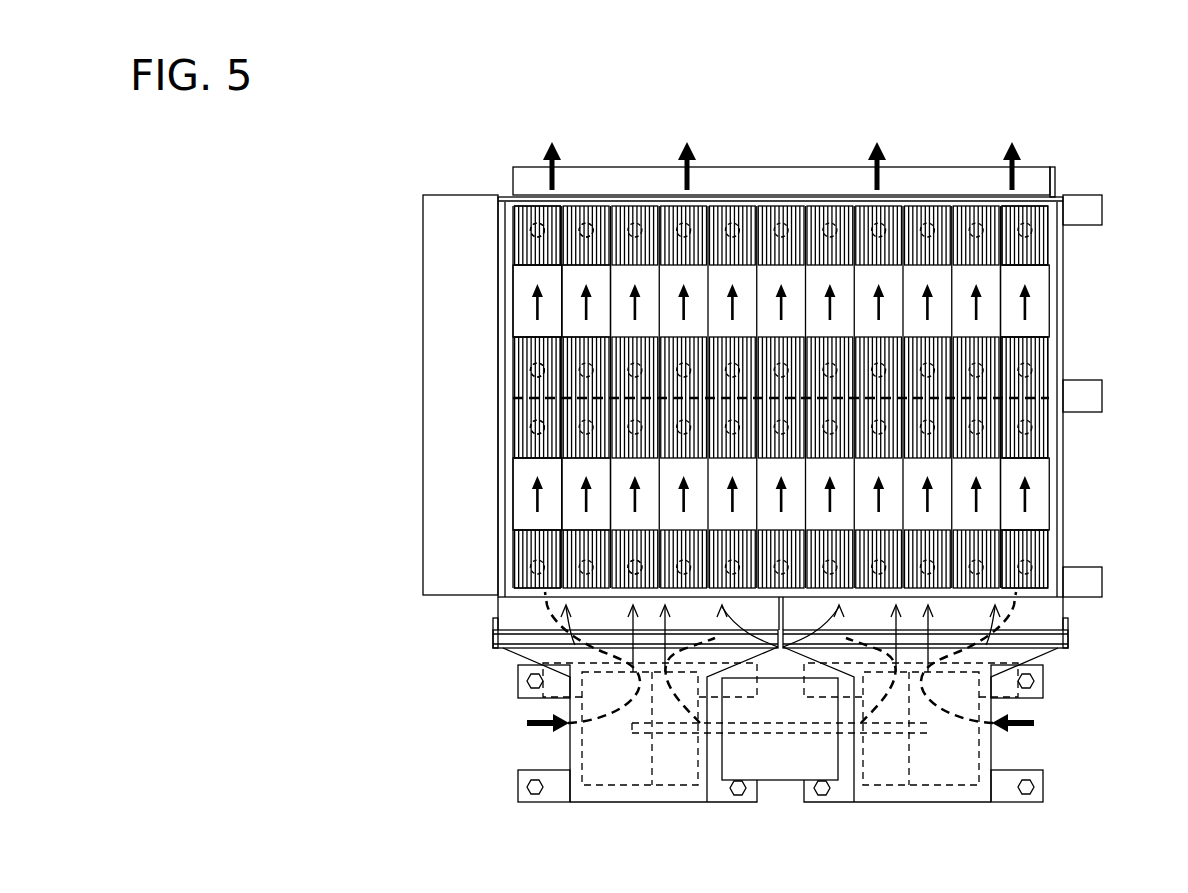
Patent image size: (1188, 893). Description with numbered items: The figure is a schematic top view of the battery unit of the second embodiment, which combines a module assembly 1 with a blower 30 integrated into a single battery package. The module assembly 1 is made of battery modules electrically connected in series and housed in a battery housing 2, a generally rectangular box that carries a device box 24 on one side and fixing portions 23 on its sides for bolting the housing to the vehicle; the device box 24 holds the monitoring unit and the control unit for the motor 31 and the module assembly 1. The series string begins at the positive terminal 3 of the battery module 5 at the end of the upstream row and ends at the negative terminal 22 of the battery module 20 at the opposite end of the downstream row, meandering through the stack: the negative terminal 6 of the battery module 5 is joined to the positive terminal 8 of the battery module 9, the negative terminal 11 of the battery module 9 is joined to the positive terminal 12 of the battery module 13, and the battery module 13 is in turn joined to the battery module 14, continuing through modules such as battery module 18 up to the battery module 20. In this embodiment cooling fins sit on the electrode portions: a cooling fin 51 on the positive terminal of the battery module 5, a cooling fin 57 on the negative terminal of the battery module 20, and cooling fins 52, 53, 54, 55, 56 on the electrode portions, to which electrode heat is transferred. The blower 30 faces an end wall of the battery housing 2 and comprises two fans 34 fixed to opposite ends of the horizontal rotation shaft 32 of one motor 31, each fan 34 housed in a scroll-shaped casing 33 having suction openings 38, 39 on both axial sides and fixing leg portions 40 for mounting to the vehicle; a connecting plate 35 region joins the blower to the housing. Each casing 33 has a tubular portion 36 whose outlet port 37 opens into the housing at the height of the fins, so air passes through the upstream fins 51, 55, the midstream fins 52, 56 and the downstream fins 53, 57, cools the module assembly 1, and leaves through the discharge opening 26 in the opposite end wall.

The module assembly 1 is at (1076, 326).
The battery housing 2 is at (1063, 461).
The positive terminal 3 is at (533, 572).
The battery module 5 is at (515, 503).
The negative terminal 6 is at (523, 427).
The positive terminal 8 is at (525, 368).
The battery module 9 is at (513, 277).
The negative terminal 11 is at (535, 222).
The positive terminal 12 is at (586, 222).
The battery module 13 is at (570, 323).
The battery module 14 is at (575, 515).
The battery cell 18 is at (1040, 486).
The battery module 20 is at (1042, 282).
The negative terminal 22 is at (1040, 205).
The fixing portions 23 is at (1095, 577).
The device box 24 is at (423, 515).
The discharge opening 26 is at (912, 167).
The blower 30 is at (1068, 712).
The motor 31 is at (780, 780).
The rotation shaft 32 is at (656, 735).
The casing 33 is at (645, 802).
The fan 34 is at (612, 785).
The connecting plate 35 is at (527, 650).
The tubular portion 36 is at (497, 606).
The outlet port 37 is at (520, 663).
The suction opening 38 is at (570, 753).
The suction opening 39 is at (713, 745).
The fixing leg portions 40 is at (540, 800).
The cooling fin 51 is at (523, 543).
The cooling fin 52 is at (525, 443).
The cooling fin 53 is at (513, 230).
The cooling fin 54 is at (627, 570).
The cooling fin 55 is at (1038, 538).
The cooling fin 56 is at (1042, 442).
The cooling fin 57 is at (1040, 248).